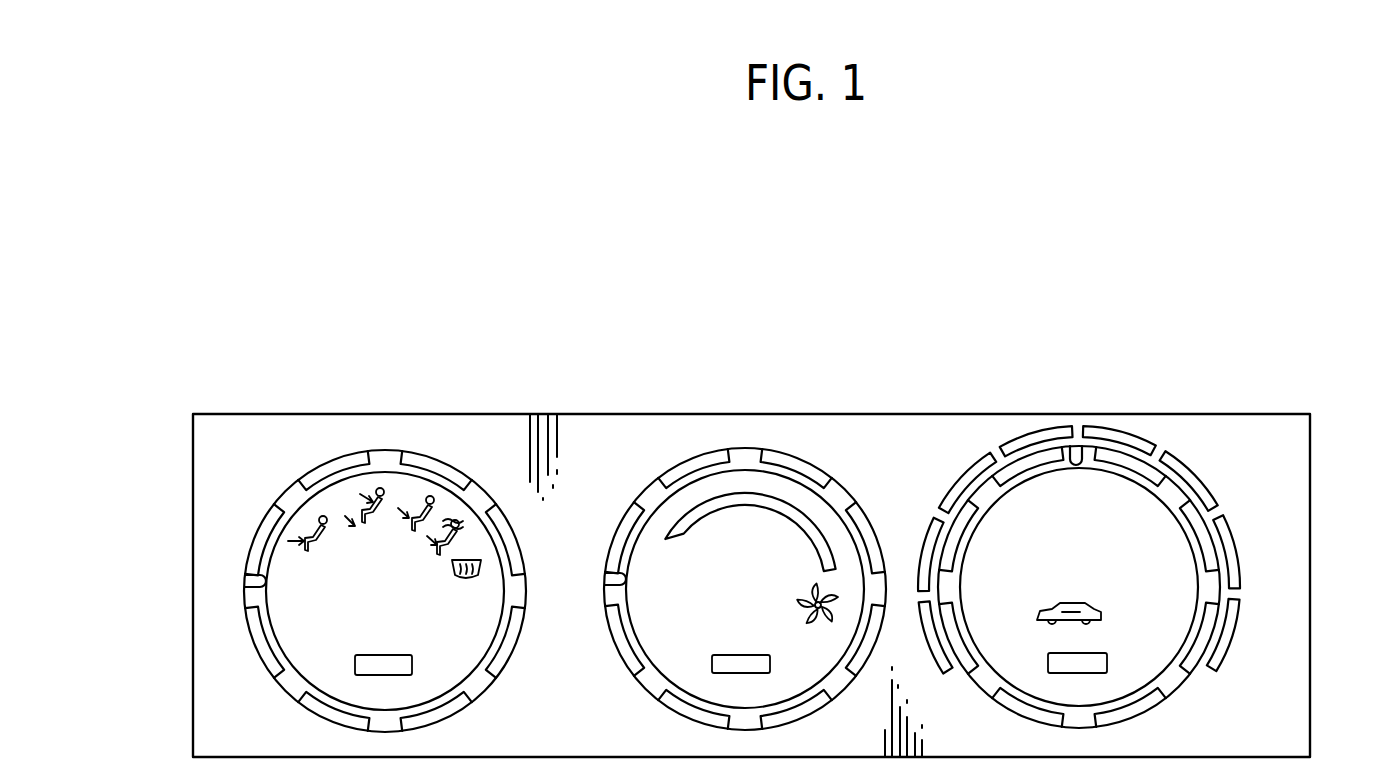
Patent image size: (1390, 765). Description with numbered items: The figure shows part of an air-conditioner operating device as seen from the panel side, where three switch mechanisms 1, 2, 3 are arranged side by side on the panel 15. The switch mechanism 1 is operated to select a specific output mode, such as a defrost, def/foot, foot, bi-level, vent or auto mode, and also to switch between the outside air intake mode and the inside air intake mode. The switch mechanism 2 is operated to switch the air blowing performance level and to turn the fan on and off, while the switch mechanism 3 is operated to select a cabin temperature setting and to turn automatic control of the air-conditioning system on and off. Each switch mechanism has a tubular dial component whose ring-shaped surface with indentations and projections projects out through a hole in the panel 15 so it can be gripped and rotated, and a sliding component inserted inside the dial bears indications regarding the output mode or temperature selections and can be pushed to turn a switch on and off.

The switch mechanism 1 is at (296, 507).
The switch mechanism 2 is at (733, 509).
The switch mechanism 3 is at (1080, 508).
The panel 15 is at (1287, 443).